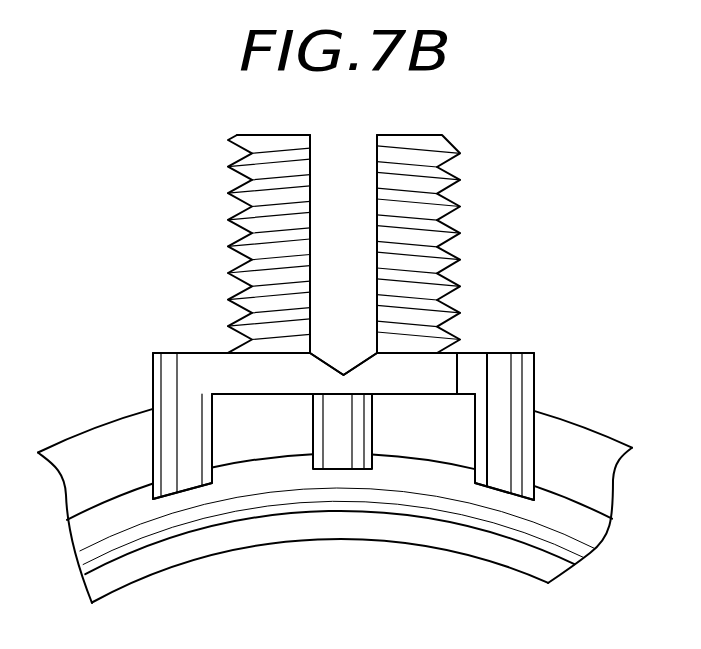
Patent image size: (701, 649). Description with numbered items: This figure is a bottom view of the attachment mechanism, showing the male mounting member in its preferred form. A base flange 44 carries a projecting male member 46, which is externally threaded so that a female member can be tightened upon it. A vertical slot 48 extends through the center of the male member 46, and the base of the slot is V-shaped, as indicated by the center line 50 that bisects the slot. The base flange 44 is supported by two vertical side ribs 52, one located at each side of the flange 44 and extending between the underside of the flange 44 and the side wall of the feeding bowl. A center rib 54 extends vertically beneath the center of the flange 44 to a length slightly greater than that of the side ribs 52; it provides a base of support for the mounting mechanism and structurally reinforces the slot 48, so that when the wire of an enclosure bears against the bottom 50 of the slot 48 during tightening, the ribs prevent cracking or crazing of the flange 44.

The base flange 44 is at (470, 353).
The male member 46 is at (457, 171).
The vertical slot 48 is at (376, 158).
The center line / bottom of slot 50 is at (343, 373).
The vertical side ribs 52 is at (213, 447).
The center rib 54 is at (372, 418).